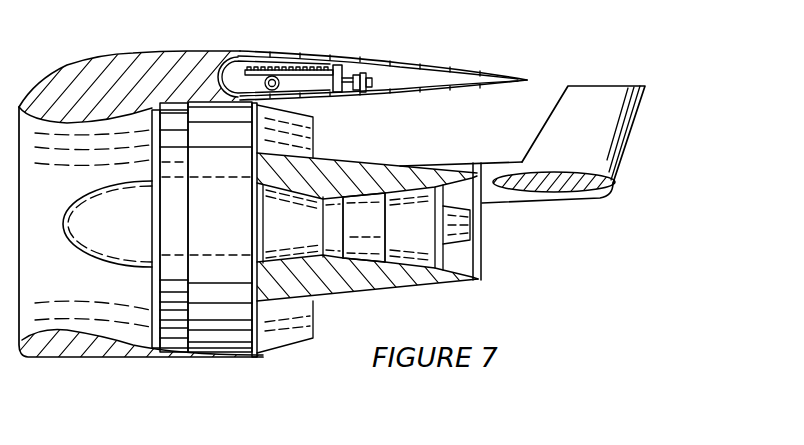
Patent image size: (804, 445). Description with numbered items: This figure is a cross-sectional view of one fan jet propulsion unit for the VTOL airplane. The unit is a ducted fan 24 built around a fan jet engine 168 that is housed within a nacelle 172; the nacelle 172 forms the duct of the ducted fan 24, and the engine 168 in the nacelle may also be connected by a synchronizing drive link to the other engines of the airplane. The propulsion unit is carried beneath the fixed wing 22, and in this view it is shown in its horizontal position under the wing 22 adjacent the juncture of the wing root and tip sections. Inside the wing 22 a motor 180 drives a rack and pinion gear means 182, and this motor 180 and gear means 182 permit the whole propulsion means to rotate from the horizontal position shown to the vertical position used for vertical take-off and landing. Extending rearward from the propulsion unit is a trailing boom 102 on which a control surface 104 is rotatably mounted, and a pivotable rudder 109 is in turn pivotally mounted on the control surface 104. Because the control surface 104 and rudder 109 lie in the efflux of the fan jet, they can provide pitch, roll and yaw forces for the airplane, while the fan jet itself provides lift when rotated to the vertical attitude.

The fixed wing 22 is at (543, 73).
The ducted fan 24 is at (65, 357).
The trailing boom 102 is at (495, 136).
The control surface 104 is at (590, 182).
The pivotable rudder 109 is at (603, 86).
The fan jet engine 168 is at (364, 227).
The nacelle 172 is at (218, 342).
The motor 180 is at (366, 70).
The rack and pinion gear means 182 is at (338, 65).